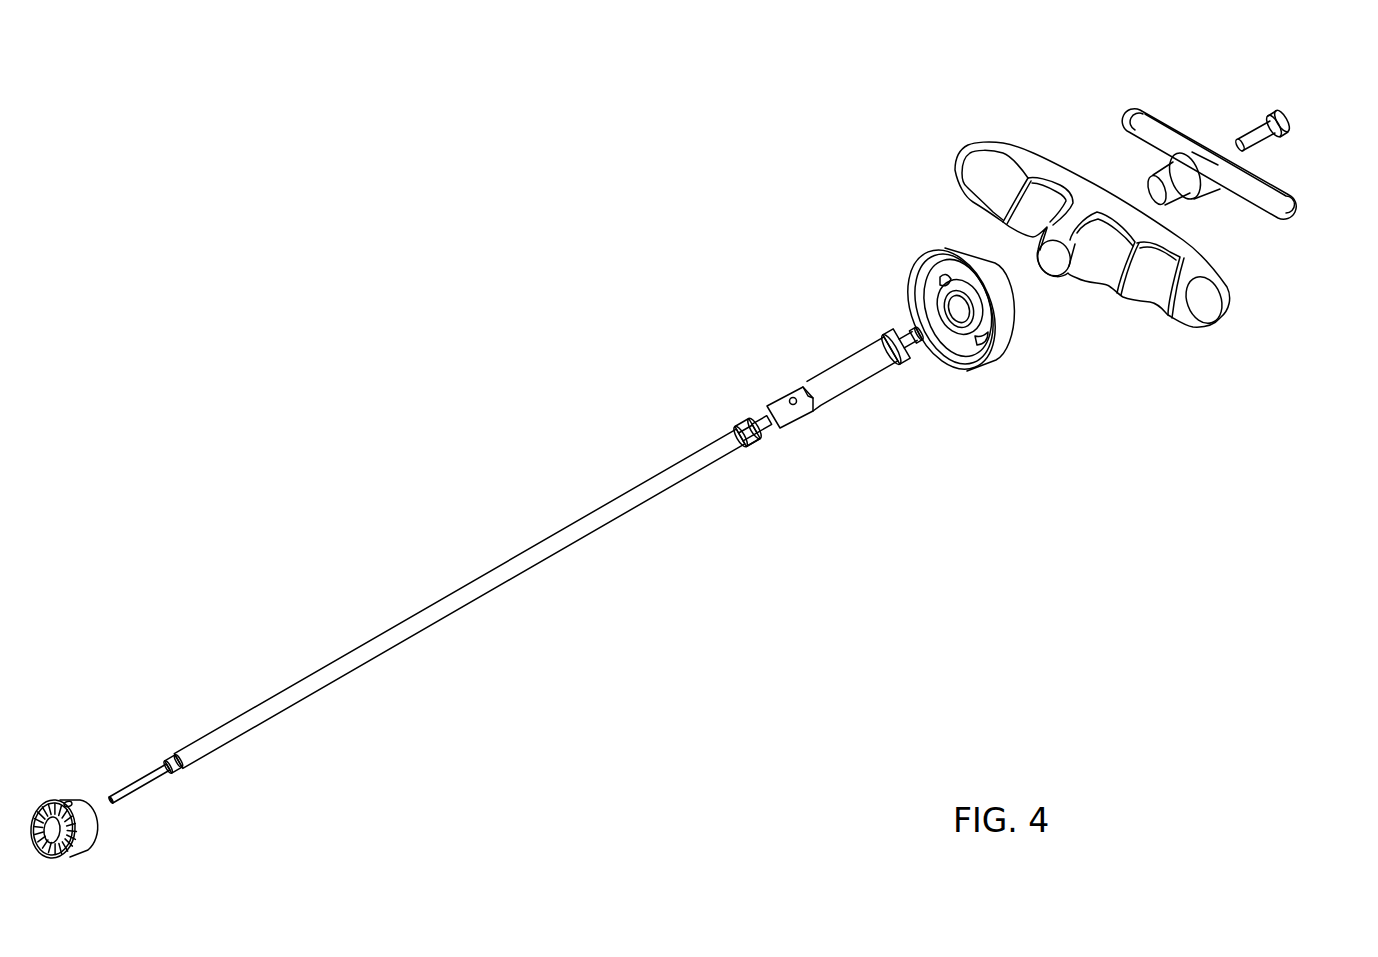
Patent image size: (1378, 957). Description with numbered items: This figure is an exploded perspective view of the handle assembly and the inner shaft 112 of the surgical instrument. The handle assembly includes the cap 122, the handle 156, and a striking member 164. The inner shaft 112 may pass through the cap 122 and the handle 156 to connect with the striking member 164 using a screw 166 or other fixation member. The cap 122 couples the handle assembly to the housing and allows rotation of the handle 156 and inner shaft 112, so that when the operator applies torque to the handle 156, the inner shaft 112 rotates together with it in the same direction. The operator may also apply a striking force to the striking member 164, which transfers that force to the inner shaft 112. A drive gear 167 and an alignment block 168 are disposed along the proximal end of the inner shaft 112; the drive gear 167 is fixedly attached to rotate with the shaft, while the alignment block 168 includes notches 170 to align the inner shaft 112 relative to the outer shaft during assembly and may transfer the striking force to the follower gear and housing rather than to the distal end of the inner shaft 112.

The inner shaft 112 is at (573, 523).
The cap 122 is at (998, 343).
The handle 156 is at (1210, 300).
The striking member 164 is at (1290, 197).
The screw 166 is at (1283, 110).
The drive gear 167 is at (67, 798).
The alignment block 168 is at (743, 417).
The notches 170 is at (746, 445).